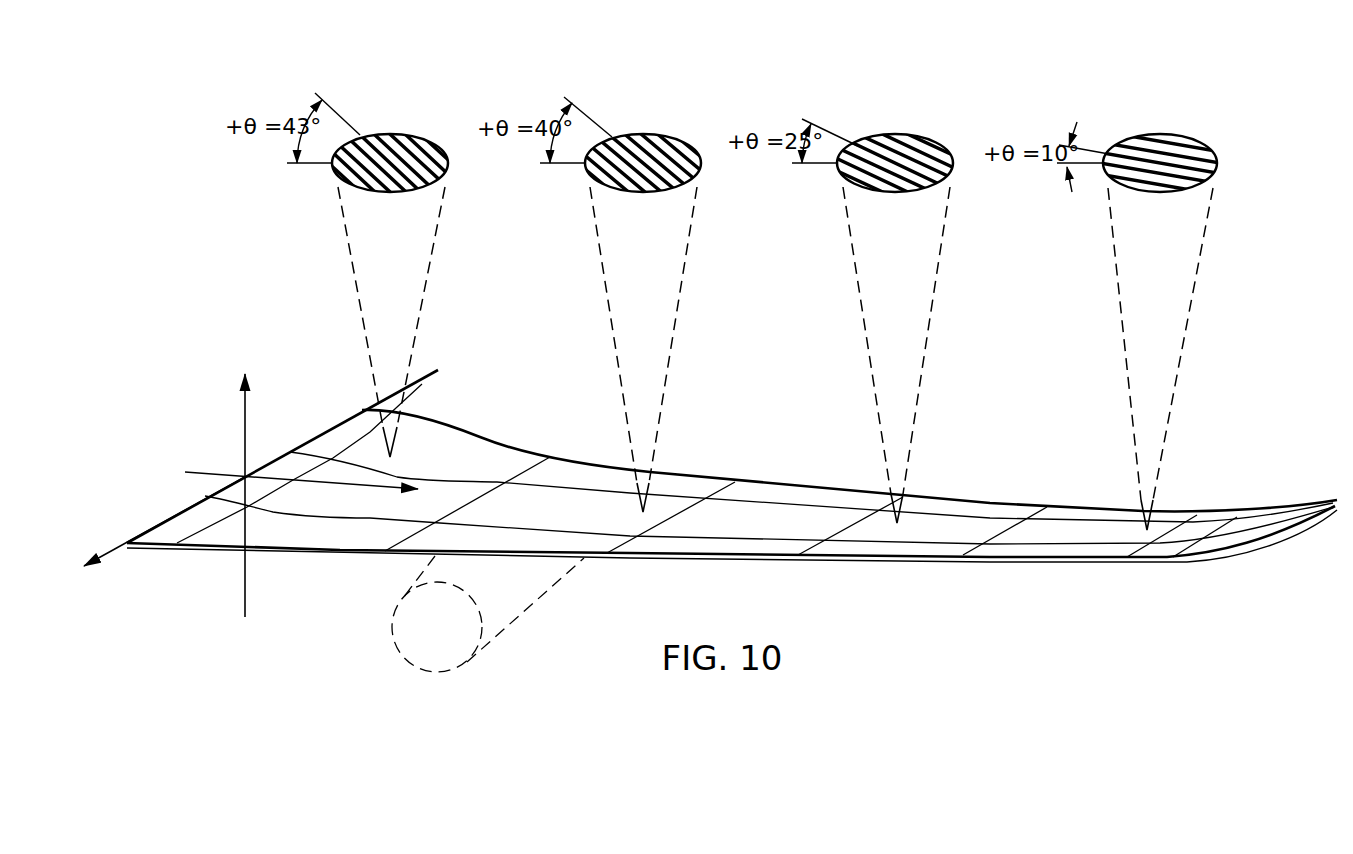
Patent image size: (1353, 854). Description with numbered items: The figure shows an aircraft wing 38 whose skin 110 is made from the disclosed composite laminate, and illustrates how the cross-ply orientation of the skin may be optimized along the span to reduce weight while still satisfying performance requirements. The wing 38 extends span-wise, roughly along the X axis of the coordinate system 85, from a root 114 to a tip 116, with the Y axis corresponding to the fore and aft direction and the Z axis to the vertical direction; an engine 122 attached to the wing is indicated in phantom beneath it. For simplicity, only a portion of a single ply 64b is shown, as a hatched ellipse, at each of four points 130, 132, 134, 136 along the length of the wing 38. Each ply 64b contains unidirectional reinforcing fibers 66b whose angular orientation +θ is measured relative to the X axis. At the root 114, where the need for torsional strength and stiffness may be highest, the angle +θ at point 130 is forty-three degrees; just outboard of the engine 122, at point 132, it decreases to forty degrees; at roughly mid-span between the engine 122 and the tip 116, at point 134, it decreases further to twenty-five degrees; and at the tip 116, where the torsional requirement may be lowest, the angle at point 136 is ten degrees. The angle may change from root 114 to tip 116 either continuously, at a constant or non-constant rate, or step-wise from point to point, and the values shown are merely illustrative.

The wing 38 is at (779, 383).
The ply 64b is at (773, 149).
The unidirectional reinforcing fibers 66b is at (774, 137).
The coordinate system 85 is at (182, 383).
The skin 110 is at (937, 508).
The root 114 is at (144, 513).
The tip 116 is at (1289, 477).
The engine 122 is at (395, 640).
The point 130 is at (409, 454).
The point 132 is at (657, 510).
The point 134 is at (914, 527).
The point 136 is at (1131, 532).